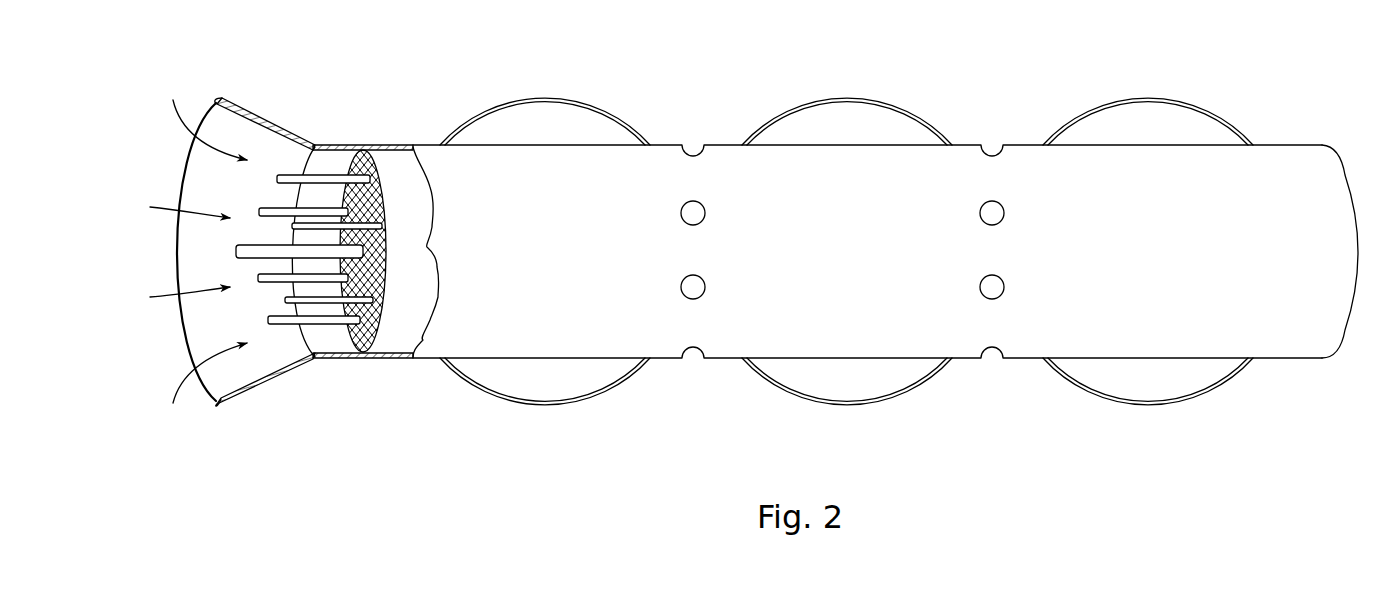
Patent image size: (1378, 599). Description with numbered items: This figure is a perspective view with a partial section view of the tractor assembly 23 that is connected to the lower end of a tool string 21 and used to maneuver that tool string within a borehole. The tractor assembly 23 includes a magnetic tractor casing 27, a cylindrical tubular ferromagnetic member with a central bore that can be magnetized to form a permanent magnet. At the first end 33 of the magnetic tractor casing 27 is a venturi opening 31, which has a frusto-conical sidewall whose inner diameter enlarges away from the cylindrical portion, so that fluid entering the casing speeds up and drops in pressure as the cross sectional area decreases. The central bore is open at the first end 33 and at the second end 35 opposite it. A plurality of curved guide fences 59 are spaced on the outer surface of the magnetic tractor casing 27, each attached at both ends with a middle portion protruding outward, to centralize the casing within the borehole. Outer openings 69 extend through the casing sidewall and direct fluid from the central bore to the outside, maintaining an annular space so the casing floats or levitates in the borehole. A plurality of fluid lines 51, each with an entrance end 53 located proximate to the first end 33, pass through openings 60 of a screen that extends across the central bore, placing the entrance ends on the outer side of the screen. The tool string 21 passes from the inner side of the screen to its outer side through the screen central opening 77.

The tool string 21 is at (255, 240).
The tractor assembly 23 is at (923, 70).
The magnetic tractor casing 27 is at (650, 160).
The venturi opening 31 is at (252, 112).
The first end 33 is at (342, 117).
The second end 35 is at (1288, 117).
The fluid line 51 is at (286, 322).
The entrance end 53 is at (268, 320).
The guide fence 59 is at (827, 100).
The opening 60 is at (343, 357).
The outer opening 69 is at (694, 360).
The screen central opening 77 is at (368, 245).